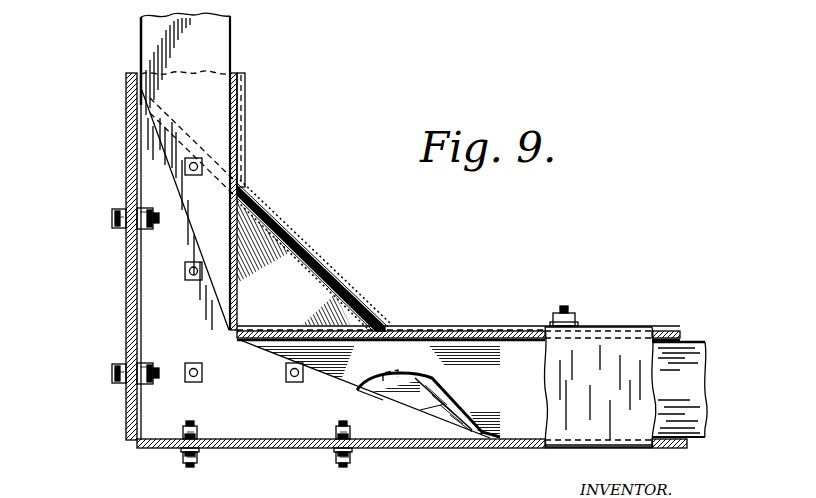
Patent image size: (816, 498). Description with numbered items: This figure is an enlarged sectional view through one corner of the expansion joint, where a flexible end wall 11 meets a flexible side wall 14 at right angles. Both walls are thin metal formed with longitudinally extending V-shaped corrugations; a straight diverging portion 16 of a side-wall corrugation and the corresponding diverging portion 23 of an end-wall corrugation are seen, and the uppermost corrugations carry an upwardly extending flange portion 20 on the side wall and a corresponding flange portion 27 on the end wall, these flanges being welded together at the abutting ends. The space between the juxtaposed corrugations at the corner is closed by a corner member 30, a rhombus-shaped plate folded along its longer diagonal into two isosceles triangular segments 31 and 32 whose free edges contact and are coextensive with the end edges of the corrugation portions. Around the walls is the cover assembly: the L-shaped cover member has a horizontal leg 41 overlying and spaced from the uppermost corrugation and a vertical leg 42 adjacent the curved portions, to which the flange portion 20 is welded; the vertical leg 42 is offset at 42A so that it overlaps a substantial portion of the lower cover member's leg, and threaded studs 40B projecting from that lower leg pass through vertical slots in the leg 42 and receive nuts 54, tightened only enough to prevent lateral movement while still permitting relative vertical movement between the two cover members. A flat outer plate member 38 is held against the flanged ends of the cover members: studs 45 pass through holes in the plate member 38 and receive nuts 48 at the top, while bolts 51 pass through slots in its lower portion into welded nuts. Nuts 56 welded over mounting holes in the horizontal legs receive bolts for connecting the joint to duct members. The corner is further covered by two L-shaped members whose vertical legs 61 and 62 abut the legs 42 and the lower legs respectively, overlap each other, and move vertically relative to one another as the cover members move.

The flexible end wall 11 is at (240, 47).
The flexible side wall 14 is at (693, 335).
The diverging portion 16 is at (336, 372).
The flange portion 20 is at (416, 339).
The diverging portion 23 is at (190, 216).
The flange portion 27 is at (240, 160).
The corner member 30 is at (309, 248).
The triangular segment 31 is at (383, 391).
The triangular segment 32 is at (438, 420).
The outer plate member 38 is at (127, 282).
The threaded stud 40B is at (567, 312).
The horizontal leg 41 is at (622, 348).
The vertical leg 42 is at (244, 141).
The offset 42A is at (246, 93).
The stud 45 is at (112, 219).
The nut 48 is at (123, 228).
The bolt 51 is at (153, 370).
The nut 54 is at (578, 324).
The nut 56 is at (190, 382).
The vertical leg 61 is at (276, 216).
The vertical leg 62 is at (330, 276).